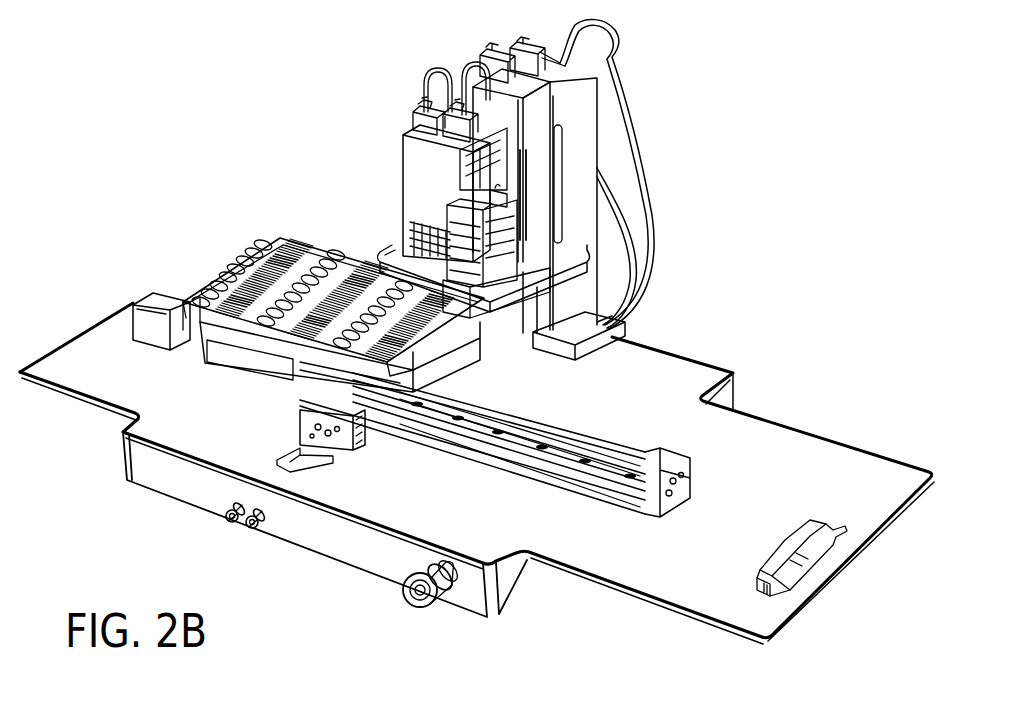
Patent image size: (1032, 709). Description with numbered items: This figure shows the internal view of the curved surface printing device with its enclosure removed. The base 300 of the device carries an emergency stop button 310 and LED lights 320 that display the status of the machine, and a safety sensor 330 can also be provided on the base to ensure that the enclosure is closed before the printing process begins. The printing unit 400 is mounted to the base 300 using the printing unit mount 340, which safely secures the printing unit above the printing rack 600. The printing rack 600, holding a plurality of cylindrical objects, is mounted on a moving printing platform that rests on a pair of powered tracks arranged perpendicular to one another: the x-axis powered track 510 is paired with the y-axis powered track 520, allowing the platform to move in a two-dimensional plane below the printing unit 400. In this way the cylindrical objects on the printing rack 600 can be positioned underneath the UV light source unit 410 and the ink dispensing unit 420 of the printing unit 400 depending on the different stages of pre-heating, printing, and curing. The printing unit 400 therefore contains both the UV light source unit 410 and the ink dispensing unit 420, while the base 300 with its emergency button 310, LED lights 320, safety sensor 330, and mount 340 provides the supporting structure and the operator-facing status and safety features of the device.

The base unit 300 is at (157, 472).
The emergency button 310 is at (420, 590).
The LED 320 is at (250, 521).
The safety sensor 330 is at (808, 560).
The mount 340 is at (580, 148).
The printing unit 400 is at (499, 185).
The UV light source 410 is at (417, 182).
The ink dispensing unit 420 is at (540, 178).
The x-axis powered track 510 is at (572, 424).
The y-axis powered track 520 is at (376, 436).
The printing rack 600 is at (268, 247).